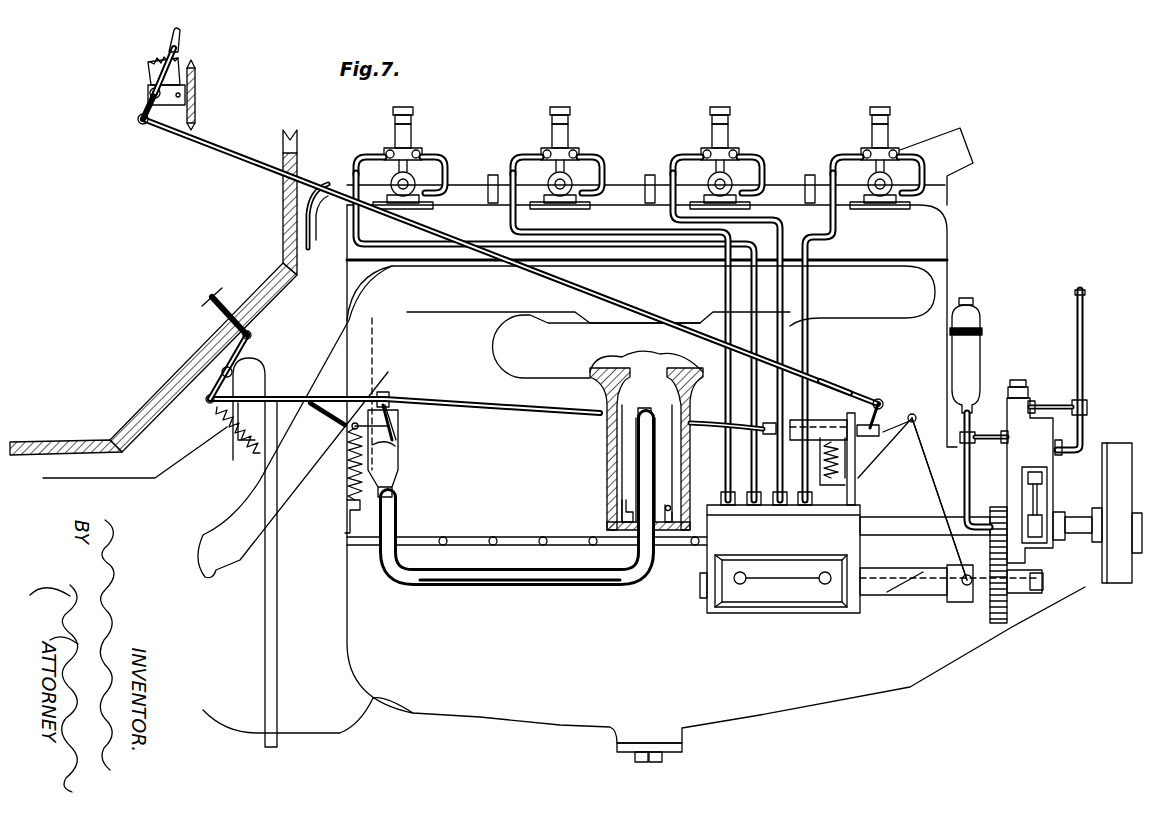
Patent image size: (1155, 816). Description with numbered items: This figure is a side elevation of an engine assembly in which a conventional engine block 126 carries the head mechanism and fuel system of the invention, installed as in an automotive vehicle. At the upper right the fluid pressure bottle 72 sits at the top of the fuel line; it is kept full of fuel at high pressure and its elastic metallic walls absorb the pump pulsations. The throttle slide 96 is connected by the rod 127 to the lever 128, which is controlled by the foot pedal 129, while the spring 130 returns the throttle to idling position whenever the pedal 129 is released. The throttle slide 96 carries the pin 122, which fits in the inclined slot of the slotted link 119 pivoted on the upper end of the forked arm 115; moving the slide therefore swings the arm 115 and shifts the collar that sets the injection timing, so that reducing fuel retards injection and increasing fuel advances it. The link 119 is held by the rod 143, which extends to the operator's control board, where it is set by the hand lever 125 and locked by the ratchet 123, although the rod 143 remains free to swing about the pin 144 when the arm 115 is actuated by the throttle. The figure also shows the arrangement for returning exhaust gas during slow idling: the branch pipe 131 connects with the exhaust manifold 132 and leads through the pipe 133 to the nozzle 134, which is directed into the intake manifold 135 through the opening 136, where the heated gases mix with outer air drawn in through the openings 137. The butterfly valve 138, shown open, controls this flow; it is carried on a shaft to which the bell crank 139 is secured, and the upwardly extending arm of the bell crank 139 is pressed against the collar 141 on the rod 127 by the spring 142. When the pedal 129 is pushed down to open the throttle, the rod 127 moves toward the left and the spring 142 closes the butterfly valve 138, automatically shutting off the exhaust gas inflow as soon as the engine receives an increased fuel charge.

The fluid pressure bottle 72 is at (966, 352).
The throttle slide 96 is at (793, 420).
The forked arm 115 is at (953, 543).
The slotted link 119 is at (893, 413).
The pin 122 is at (914, 435).
The ratchet 123 is at (152, 68).
The hand lever 125 is at (170, 42).
The engine block 126 is at (940, 257).
The rod 127 is at (478, 395).
The lever 128 is at (243, 358).
The foot pedal 129 is at (210, 297).
The spring 130 is at (217, 413).
The branch pipe 131 is at (400, 378).
The exhaust manifold 132 is at (641, 296).
The pipe 133 is at (547, 573).
The nozzle 134 is at (640, 413).
The intake manifold 135 is at (598, 345).
The opening 136 is at (645, 387).
The openings 137 is at (612, 500).
The butterfly valve 138 is at (395, 440).
The bell crank 139 is at (394, 428).
The collar 141 is at (383, 392).
The spring 142 is at (352, 496).
The rod 143 is at (833, 387).
The pin 144 is at (142, 112).